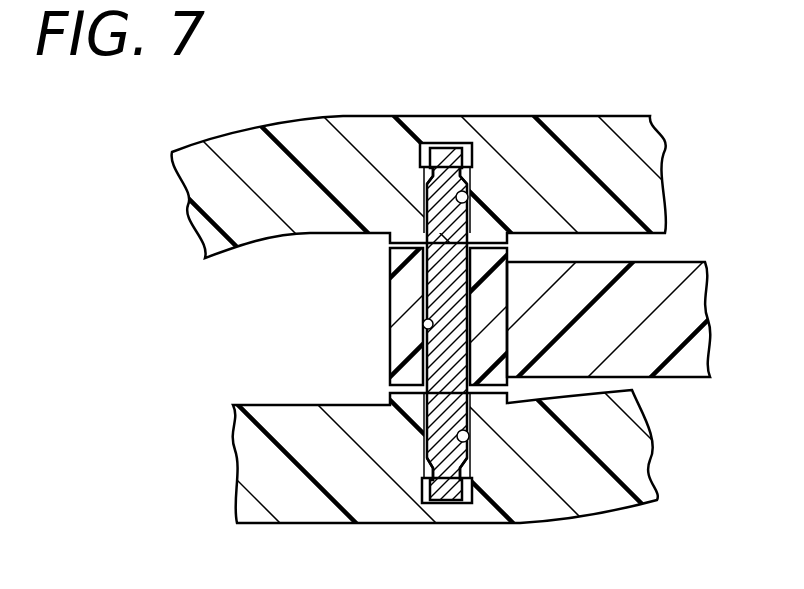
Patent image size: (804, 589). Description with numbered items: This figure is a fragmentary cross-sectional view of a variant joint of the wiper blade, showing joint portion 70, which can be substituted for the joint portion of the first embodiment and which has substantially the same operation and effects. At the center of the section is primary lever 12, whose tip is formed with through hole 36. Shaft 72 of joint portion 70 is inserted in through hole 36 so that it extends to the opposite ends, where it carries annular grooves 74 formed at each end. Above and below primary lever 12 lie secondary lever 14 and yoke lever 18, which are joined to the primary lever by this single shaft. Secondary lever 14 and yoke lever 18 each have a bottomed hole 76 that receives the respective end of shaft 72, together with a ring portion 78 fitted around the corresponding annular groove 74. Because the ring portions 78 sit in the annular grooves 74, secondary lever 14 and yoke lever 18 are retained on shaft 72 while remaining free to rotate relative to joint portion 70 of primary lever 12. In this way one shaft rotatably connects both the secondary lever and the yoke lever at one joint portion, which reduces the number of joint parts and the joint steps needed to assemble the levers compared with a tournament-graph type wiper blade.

The primary lever 12 is at (681, 262).
The secondary lever 14 is at (268, 127).
The yoke lever 18 is at (314, 524).
The through hole 36 is at (420, 338).
The joint portion 70 is at (453, 90).
The shaft 72 is at (437, 296).
The annular groove 74 is at (424, 166).
The bottomed hole 76 is at (467, 192).
The ring portion 78 is at (464, 143).